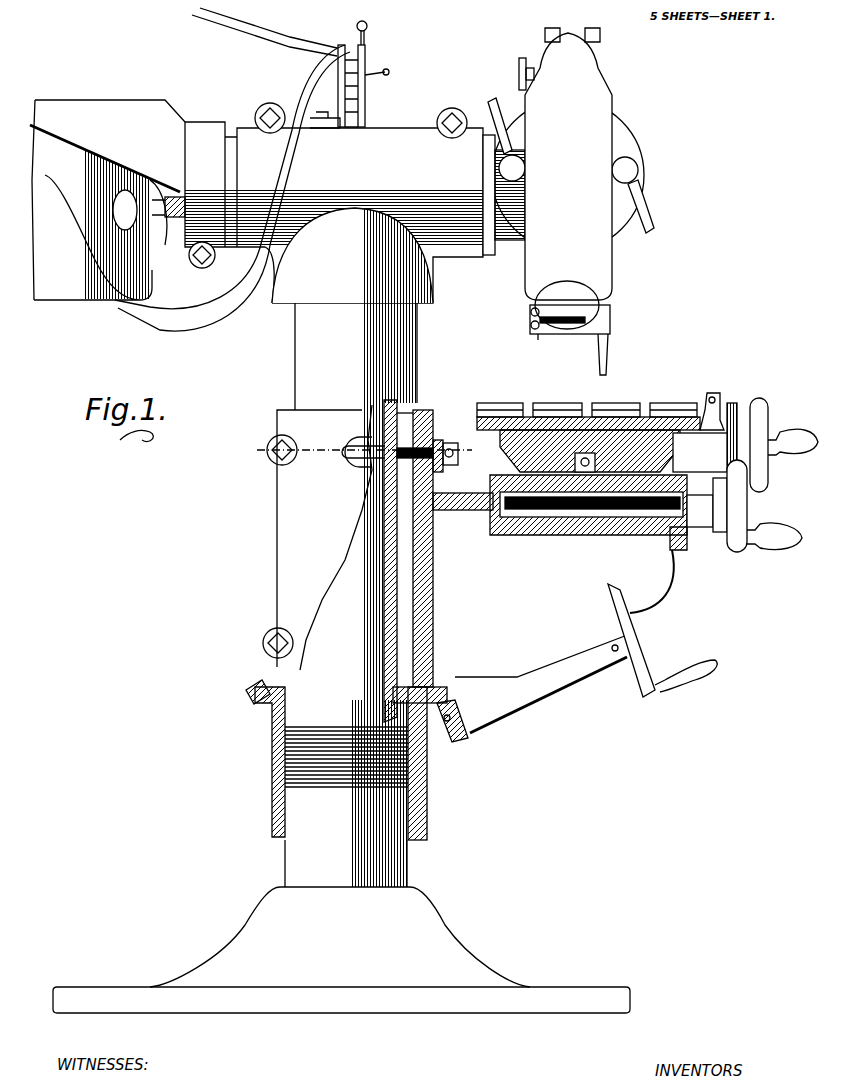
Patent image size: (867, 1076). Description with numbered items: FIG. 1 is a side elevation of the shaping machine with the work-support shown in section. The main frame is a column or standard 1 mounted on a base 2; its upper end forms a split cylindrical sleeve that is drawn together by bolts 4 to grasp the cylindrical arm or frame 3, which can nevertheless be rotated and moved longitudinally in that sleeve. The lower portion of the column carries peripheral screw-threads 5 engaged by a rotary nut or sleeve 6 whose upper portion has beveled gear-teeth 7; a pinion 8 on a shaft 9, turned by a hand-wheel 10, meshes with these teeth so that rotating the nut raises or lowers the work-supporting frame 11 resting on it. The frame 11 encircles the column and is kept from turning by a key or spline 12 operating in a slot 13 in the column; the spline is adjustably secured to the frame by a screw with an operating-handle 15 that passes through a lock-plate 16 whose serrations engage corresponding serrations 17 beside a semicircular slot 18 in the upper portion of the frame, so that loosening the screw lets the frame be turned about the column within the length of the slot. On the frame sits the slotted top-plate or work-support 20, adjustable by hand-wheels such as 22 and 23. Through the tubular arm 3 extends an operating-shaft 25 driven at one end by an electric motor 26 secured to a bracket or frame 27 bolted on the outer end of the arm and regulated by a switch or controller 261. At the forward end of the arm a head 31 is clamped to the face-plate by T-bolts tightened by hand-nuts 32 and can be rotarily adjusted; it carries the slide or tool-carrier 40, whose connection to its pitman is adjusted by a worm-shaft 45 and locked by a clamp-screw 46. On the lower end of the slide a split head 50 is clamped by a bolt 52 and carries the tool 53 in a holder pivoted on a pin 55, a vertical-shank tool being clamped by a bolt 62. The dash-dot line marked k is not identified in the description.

The column 1 is at (348, 595).
The base 2 is at (432, 900).
The arm or frame 3 is at (230, 167).
The bolts 4 is at (450, 130).
The peripheral screw-threads 5 is at (330, 780).
The rotary nut or sleeve 6 is at (272, 755).
The beveled gear-teeth 7 is at (255, 702).
The pinion 8 is at (448, 748).
The shaft 9 is at (440, 735).
The hand-wheel 10 is at (640, 686).
The work-supporting frame 11 is at (280, 520).
The key or spline 12 is at (400, 583).
The slot 13 is at (398, 540).
The operating-handle 15 is at (450, 447).
The lock-plate 16 is at (436, 440).
The serrations 17 is at (432, 478).
The semicircular slot 18 is at (341, 462).
The slotted top-plate or work-support 20 is at (500, 408).
The hand-wheel 22 is at (760, 416).
The hand-wheel 23 is at (740, 511).
The operating-shaft 25 is at (176, 218).
The electric motor 26 is at (93, 237).
The bracket or frame 27 is at (107, 200).
The head 31 is at (568, 175).
The hand-nuts 32 is at (512, 168).
The slide or tool-carrier 40 is at (568, 181).
The worm-shaft 45 is at (530, 80).
The clamp-screw 46 is at (550, 40).
The head 50 is at (570, 319).
The bolt 52 is at (530, 312).
The tool 53 is at (607, 362).
The pin 55 is at (538, 338).
The bolt 62 is at (530, 327).
The switch or controller 261 is at (355, 128).
The clamp nut k is at (333, 380).